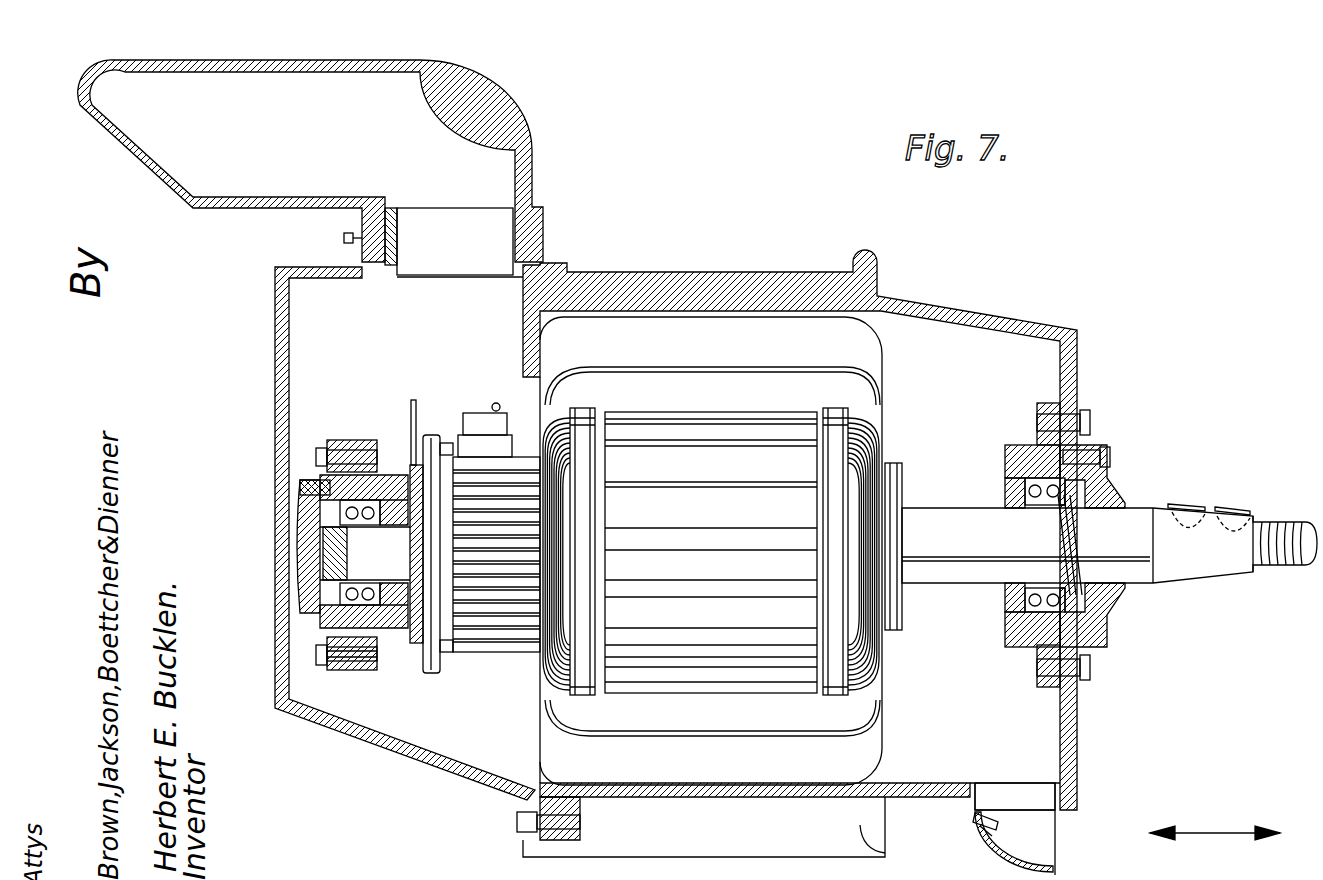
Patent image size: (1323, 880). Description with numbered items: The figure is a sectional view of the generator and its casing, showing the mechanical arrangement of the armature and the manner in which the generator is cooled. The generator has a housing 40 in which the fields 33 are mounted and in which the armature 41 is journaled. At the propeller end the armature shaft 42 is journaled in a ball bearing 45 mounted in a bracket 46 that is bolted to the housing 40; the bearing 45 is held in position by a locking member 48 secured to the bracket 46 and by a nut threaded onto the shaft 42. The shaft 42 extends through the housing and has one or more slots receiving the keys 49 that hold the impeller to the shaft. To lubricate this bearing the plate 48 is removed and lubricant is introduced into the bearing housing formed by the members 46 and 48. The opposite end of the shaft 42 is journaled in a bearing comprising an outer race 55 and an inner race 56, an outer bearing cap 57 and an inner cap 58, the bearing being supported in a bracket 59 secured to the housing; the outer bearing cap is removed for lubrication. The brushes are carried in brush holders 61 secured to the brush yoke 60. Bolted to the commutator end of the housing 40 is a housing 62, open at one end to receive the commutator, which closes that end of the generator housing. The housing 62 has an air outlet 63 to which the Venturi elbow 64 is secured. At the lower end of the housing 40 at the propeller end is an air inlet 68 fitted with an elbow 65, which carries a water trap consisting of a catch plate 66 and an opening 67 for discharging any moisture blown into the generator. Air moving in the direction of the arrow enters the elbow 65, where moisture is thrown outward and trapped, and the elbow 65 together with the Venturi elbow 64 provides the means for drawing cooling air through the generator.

The fields 33 is at (711, 551).
The housing 40 is at (877, 262).
The armature 41 is at (882, 434).
The armature shaft 42 is at (935, 516).
The ball bearing 45 is at (1037, 596).
The bracket 46 is at (1016, 453).
The locking member 48 is at (1107, 493).
The keys 49 is at (1205, 512).
The outer race 55 is at (302, 521).
The inner race 56 is at (363, 553).
The outer bearing cap 57 is at (300, 506).
The inner cap 58 is at (372, 485).
The bracket 59 is at (350, 667).
The brush yoke 60 is at (432, 460).
The brush holders 61 is at (488, 420).
The housing 62 is at (277, 310).
The air outlet 63 is at (430, 217).
The Venturi elbow 64 is at (518, 146).
The elbow 65 is at (1015, 862).
The catch plate 66 is at (990, 842).
The opening 67 is at (977, 830).
The air inlet 68 is at (1017, 797).